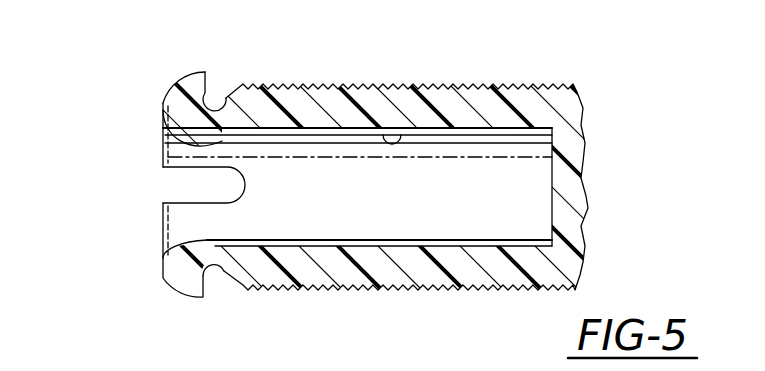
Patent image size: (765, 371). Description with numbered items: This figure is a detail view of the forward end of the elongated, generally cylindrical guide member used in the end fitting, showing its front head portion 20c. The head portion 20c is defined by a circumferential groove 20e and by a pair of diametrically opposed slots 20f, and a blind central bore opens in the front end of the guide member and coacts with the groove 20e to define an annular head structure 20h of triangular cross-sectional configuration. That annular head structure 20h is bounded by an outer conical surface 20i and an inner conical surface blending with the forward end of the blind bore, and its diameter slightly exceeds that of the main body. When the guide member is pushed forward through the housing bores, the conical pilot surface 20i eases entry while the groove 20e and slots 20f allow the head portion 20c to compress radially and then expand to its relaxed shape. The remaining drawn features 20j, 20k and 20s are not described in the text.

The front head portion 20c is at (161, 278).
The circumferential groove 20e is at (230, 275).
The slot 20f is at (185, 200).
The annular head structure 20h is at (165, 125).
The outer conical surface 20i is at (172, 91).
The bore edge 20j is at (163, 157).
The bore end wall 20k is at (551, 213).
The sleeve / seal 20s is at (395, 132).